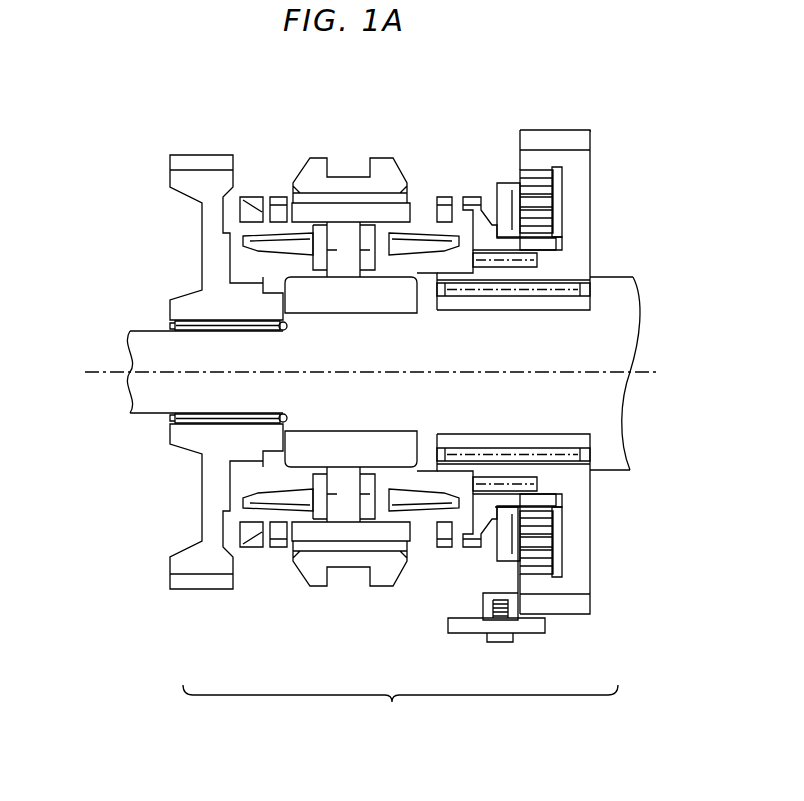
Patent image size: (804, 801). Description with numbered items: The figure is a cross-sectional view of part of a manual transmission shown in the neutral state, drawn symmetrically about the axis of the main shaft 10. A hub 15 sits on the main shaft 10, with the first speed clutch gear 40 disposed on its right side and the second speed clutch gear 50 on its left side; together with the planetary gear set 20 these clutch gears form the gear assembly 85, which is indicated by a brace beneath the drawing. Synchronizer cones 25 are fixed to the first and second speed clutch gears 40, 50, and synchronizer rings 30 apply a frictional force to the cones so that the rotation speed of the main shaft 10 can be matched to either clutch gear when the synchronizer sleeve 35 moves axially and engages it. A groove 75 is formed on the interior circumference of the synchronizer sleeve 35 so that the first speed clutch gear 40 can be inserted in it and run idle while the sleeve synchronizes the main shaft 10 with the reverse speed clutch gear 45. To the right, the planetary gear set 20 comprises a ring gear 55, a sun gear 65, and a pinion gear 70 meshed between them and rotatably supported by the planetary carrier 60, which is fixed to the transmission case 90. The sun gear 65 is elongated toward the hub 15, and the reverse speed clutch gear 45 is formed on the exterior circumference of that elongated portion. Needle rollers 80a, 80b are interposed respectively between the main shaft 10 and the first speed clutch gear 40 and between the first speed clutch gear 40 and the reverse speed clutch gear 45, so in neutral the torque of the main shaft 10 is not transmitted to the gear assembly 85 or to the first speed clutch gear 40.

The main shaft 10 is at (597, 398).
The hub 15 is at (347, 218).
The planetary gear set 20 is at (600, 135).
The synchronizer cones 25 is at (287, 243).
The synchronizer rings 30 is at (280, 217).
The synchronizer sleeve 35 is at (387, 170).
The first speed clutch gear 40 is at (451, 200).
The reverse speed clutch gear 45 is at (468, 202).
The second speed clutch gear 50 is at (262, 205).
The ring gear 55 is at (582, 177).
The planetary carrier 60 is at (503, 563).
The sun gear 65 is at (563, 243).
The pinion gear 70 is at (560, 220).
The groove 75 is at (350, 218).
The needle roller 80a is at (590, 291).
The needle roller 80b is at (545, 260).
The gear assembly 85 is at (400, 708).
The transmission case 90 is at (468, 628).